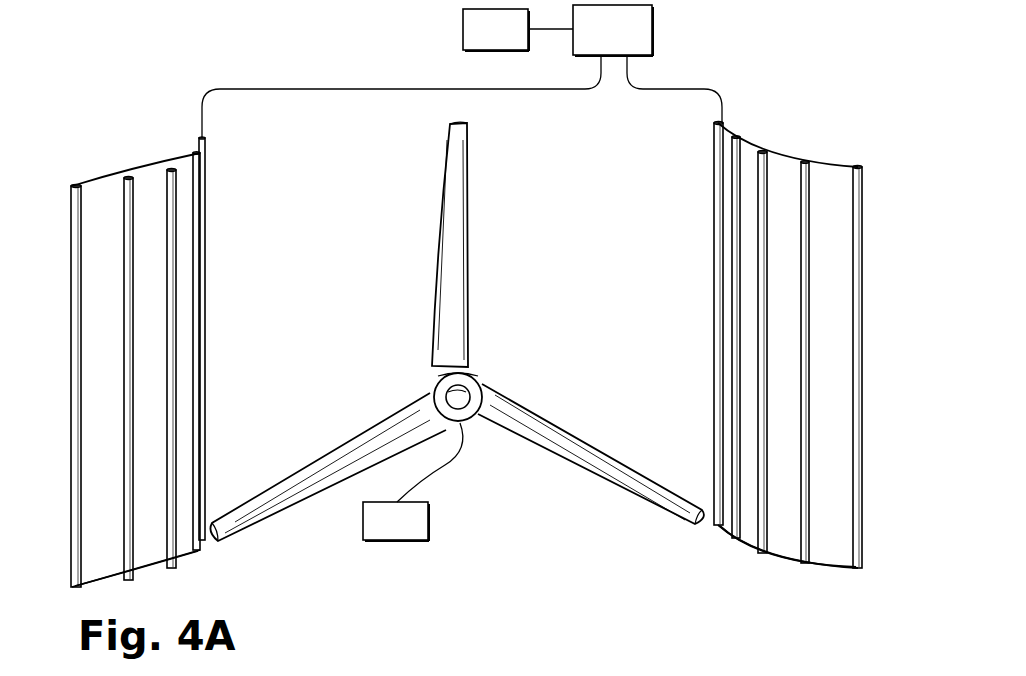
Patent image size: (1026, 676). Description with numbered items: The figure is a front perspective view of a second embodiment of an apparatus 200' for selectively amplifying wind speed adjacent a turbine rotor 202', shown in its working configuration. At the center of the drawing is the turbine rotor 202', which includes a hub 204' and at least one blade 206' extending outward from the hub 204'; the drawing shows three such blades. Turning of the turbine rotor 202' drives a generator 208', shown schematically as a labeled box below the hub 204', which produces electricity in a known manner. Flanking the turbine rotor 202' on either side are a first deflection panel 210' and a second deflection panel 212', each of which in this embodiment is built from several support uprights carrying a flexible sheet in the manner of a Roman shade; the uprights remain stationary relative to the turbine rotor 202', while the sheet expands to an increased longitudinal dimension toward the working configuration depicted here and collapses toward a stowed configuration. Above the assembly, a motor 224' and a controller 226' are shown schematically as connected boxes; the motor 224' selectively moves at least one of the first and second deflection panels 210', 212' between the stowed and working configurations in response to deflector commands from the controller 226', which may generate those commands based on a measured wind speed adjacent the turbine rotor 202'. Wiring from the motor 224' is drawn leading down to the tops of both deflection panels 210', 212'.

The apparatus 200' is at (458, 78).
The turbine rotor 202' is at (456, 334).
The hub 204' is at (502, 382).
The blade 206' is at (499, 244).
The generator 208' is at (413, 482).
The first deflection panel 210' is at (120, 349).
The second deflection panel 212' is at (823, 349).
The motor 224' is at (613, 30).
The controller 226' is at (518, 30).